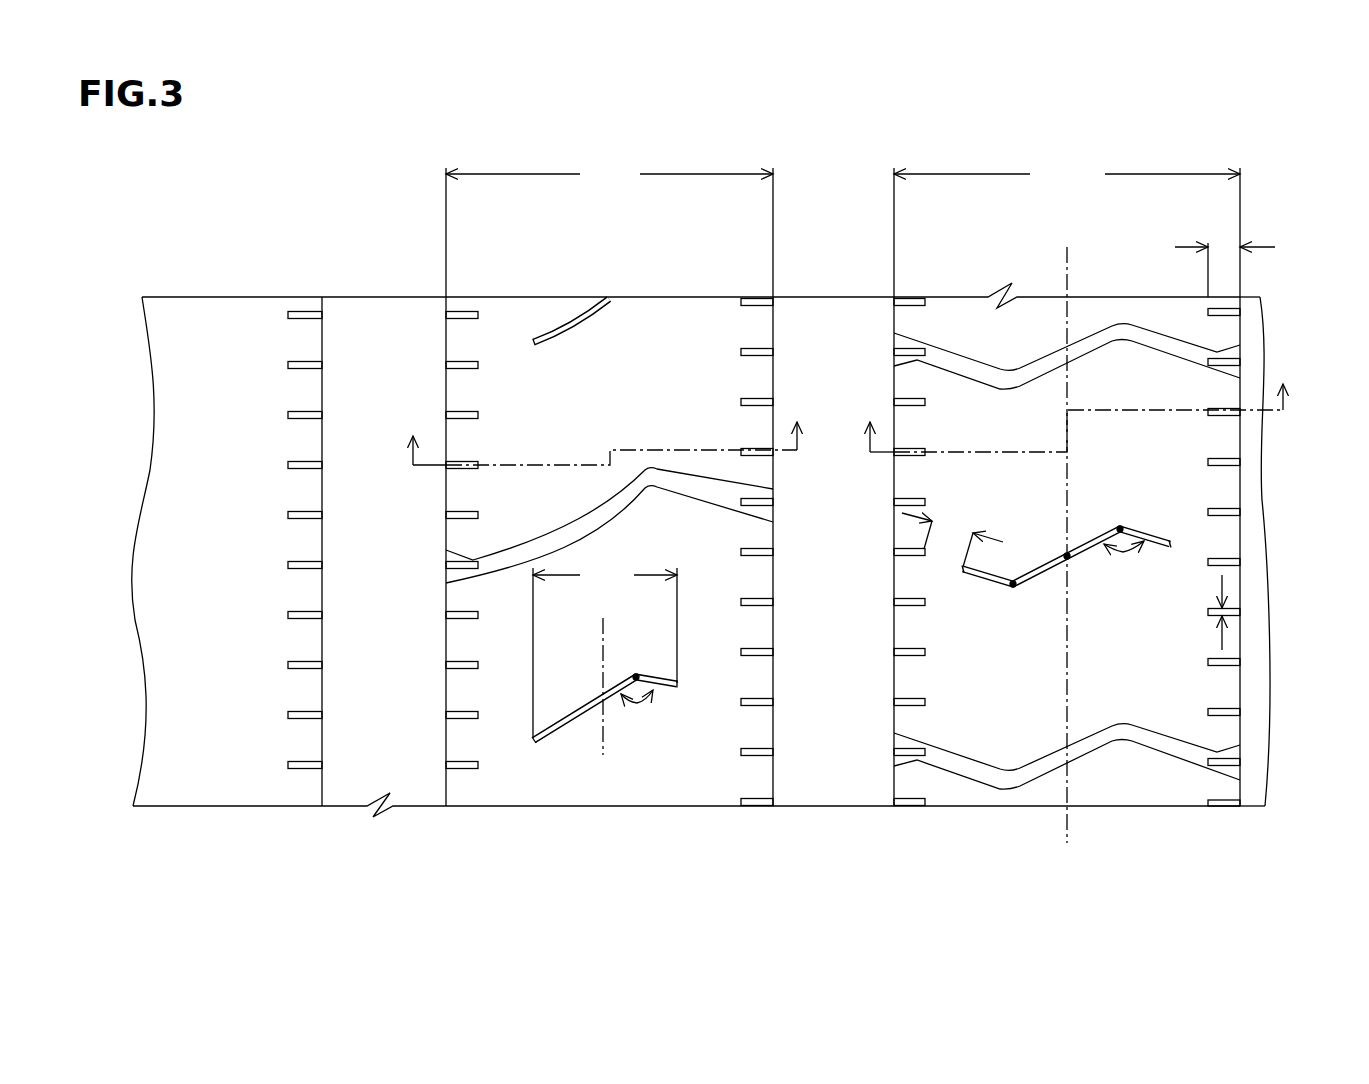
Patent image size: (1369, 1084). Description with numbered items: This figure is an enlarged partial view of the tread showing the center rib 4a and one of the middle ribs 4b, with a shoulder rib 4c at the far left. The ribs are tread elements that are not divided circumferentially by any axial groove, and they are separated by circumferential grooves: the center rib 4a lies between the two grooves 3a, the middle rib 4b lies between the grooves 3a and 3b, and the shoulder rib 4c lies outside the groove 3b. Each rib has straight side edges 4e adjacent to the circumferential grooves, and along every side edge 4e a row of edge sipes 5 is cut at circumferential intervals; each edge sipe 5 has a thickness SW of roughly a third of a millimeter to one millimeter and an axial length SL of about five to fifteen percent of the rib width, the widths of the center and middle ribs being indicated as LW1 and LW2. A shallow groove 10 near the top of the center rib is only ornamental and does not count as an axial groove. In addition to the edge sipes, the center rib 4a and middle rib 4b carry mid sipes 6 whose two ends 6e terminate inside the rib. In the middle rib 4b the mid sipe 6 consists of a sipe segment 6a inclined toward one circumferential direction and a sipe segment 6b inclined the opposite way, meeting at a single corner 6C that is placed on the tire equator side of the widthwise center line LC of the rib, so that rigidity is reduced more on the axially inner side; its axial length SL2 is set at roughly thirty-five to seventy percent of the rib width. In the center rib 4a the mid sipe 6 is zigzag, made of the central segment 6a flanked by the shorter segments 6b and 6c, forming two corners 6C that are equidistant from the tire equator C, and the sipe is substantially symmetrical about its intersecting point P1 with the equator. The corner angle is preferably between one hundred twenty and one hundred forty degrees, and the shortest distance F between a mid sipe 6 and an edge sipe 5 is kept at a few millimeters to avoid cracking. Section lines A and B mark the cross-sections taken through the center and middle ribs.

The circumferential groove 3a is at (828, 752).
The circumferential groove 3b is at (390, 752).
The center rib 4a is at (1031, 322).
The middle rib 4b is at (657, 325).
The shoulder rib 4c is at (202, 320).
The side edge 4e is at (322, 338).
The edge sipe 5 is at (295, 670).
The mid sipe 6 is at (563, 318).
The sipe segment 6a is at (582, 722).
The sipe segment 6b is at (670, 690).
The additional sipe segment 6c is at (989, 584).
The corner 6C is at (640, 672).
The end of mid sipe 6e is at (534, 742).
The ornamental groove 10 is at (1125, 335).
The intersecting point P1 is at (1068, 552).
The width of center rib LW1 is at (1067, 174).
The width of middle rib LW2 is at (609, 174).
The length of edge sipe SL is at (1225, 258).
The axial length of mid sipe SL2 is at (605, 649).
The thickness of edge sipe SW is at (1222, 612).
The shortest distance between mid sipe and edge sipe F is at (952, 533).
The widthwise center line of rib LC is at (603, 638).
The tire equator C is at (1067, 531).
The section line A- A is at (1077, 402).
The section line B- B is at (605, 428).